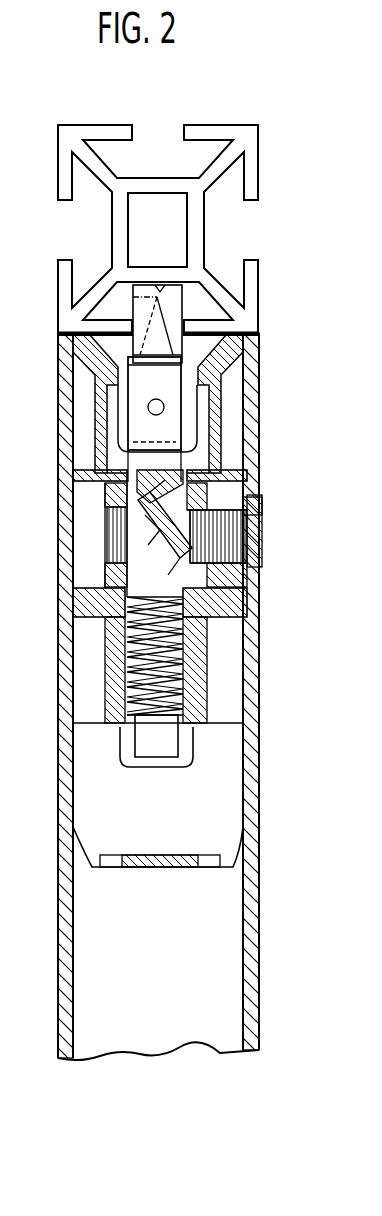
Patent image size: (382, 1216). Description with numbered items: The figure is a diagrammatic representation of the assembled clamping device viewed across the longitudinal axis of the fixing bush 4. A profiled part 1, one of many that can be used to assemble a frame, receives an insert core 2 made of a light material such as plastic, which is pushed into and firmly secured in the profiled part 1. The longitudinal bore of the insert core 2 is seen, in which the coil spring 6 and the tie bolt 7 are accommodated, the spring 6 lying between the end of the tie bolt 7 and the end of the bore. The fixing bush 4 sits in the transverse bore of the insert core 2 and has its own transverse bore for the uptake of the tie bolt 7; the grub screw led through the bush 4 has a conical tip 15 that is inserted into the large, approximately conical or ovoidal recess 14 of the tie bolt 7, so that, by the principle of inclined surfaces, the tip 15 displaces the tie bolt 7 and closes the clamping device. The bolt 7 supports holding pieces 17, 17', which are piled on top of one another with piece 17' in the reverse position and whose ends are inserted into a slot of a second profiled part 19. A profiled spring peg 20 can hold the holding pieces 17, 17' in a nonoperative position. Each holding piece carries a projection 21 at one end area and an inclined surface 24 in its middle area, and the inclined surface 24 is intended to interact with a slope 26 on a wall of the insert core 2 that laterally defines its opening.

The profiled part 1 is at (290, 845).
The insert core 2 is at (225, 763).
The fixing bush 4 is at (252, 494).
The coil spring 6 is at (192, 662).
The tie bolt 7 is at (195, 592).
The recess 14 is at (172, 503).
The tip of the screw 15 is at (180, 541).
The holding piece 17 is at (75, 296).
The holding piece 17' is at (250, 310).
The second profiled part 19 is at (97, 128).
The profiled spring peg 20 is at (190, 424).
The projection 21 is at (173, 285).
The inclined surface 24 is at (207, 373).
The slope 26 is at (223, 352).